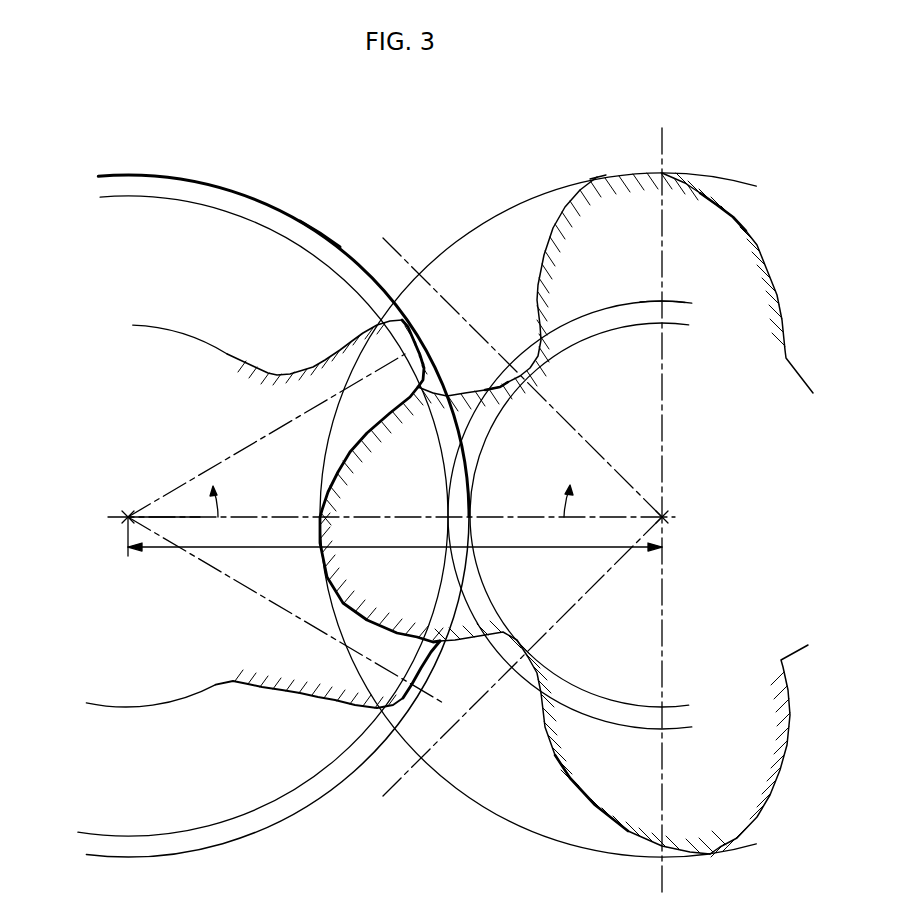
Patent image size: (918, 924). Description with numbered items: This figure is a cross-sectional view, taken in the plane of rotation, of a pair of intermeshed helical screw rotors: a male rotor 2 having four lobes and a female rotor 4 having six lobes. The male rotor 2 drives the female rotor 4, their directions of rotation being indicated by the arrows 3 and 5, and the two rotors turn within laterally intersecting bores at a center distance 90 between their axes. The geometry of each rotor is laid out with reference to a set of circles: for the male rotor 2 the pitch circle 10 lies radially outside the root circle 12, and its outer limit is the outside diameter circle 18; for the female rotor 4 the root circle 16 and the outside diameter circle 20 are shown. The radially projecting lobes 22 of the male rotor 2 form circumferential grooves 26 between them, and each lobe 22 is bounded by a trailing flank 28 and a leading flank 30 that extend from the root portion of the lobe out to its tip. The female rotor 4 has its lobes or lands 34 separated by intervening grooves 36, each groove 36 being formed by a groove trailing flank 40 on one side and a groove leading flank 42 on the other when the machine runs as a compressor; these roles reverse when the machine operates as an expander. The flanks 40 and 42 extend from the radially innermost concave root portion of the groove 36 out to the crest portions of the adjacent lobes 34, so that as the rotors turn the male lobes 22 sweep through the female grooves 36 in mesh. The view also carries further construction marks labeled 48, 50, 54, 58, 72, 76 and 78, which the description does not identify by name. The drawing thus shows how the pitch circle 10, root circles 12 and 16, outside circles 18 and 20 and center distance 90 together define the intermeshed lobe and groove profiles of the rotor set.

The male rotor 2 is at (597, 170).
The arrow 3 is at (565, 494).
The female rotor 4 is at (313, 229).
The arrow 5 is at (219, 494).
The pitch circle 10 is at (520, 681).
The root circle 12 is at (577, 670).
The root circle 16 is at (160, 328).
The outside diameter circle 18 is at (743, 160).
The outside diameter circle 20 is at (245, 160).
The lobes 22 is at (399, 483).
The circumferential grooves 26 is at (506, 309).
The trailing flank 28 is at (543, 245).
The leading flank 30 is at (760, 248).
The lobes 34 is at (327, 659).
The grooves 36 is at (299, 341).
The groove trailing flank 40 is at (294, 372).
The groove leading flank 42 is at (421, 384).
The center of first gear 48 is at (128, 516).
The center of second gear 50 is at (667, 516).
The radial reference line 54 is at (247, 447).
The line of centers 58 is at (163, 516).
The center line 72 is at (395, 516).
The radial reference line 76 is at (597, 428).
The pitch circle arc 78 is at (663, 293).
The center distance 90 is at (420, 549).